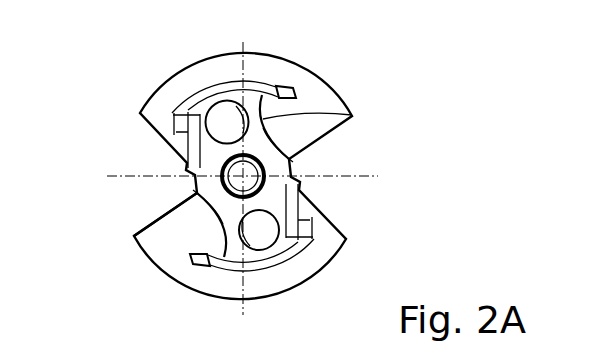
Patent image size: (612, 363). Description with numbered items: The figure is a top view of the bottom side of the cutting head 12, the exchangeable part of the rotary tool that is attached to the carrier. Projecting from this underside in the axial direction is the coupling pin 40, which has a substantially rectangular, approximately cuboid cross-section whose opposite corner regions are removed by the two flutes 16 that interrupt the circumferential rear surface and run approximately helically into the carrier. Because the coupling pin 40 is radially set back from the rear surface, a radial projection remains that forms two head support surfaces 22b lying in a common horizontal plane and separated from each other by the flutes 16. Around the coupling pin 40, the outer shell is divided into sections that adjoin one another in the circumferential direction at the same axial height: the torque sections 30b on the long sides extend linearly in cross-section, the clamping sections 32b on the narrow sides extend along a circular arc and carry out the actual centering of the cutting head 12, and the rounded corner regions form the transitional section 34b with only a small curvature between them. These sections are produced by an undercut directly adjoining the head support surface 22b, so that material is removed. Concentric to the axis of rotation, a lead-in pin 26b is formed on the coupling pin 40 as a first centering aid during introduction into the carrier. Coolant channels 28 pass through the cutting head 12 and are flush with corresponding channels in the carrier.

The cutting head 12 is at (380, 63).
The flutes 16 is at (148, 208).
The head support surfaces 22b is at (280, 279).
The lead-in pin 26b is at (282, 148).
The coolant channels 28 is at (295, 256).
The torque sections 30b is at (190, 133).
The clamping sections 32b is at (288, 86).
The transitional section 34b is at (200, 83).
The coupling pin 40 is at (257, 151).